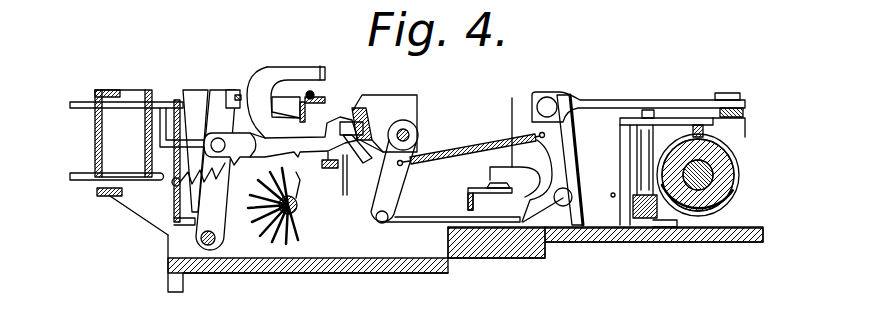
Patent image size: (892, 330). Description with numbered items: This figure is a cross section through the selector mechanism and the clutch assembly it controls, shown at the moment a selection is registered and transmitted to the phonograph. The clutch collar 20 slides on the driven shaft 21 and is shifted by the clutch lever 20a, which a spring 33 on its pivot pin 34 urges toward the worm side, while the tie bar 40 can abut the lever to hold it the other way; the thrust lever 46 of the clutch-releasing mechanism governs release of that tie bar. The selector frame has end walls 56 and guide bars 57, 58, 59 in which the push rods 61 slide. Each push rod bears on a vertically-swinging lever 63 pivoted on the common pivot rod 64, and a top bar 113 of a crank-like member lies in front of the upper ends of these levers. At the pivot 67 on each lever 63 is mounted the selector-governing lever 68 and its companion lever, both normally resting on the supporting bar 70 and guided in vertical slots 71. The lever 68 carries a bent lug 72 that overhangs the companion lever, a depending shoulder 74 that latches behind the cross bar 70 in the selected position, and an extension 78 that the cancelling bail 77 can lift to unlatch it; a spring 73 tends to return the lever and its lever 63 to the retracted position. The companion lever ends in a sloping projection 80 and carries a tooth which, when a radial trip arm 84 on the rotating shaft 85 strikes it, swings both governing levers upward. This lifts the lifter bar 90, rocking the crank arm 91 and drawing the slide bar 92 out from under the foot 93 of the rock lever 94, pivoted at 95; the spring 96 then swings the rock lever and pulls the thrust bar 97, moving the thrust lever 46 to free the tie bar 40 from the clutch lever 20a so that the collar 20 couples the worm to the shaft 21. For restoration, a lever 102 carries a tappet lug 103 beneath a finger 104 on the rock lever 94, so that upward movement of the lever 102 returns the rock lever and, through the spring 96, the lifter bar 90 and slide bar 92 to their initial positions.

The clutch collar 20 is at (742, 170).
The clutch lever 20a is at (683, 122).
The driven shaft 21 is at (725, 193).
The spring 33 is at (650, 222).
The pivot pin 34 is at (650, 108).
The tie bar 40 is at (735, 119).
The thrust lever 46 is at (745, 103).
The end walls 56 is at (377, 248).
The guide bar 57 is at (97, 192).
The guide bar 58 is at (160, 195).
The guide bar 59 is at (173, 113).
The selector element 61 is at (95, 133).
The vertically-swinging lever 63 is at (220, 95).
The pivot rod 64 is at (200, 243).
The pivot 67 is at (230, 149).
The selector-governing lever 68 is at (320, 158).
The supporting bar 70 is at (323, 170).
The vertical slots 71 is at (333, 118).
The lug 72 is at (360, 108).
The spring 73 is at (173, 210).
The depending lug 74 is at (340, 170).
The cancelling bail 77 is at (310, 91).
The extension 78 is at (287, 73).
The downwardly-sloping projection 80 is at (408, 126).
The trip arm 84 is at (270, 225).
The shaft 85 is at (300, 213).
The lifter bar 90 is at (368, 157).
The crank arm 91 is at (420, 131).
The slide bar 92 is at (433, 227).
The foot 93 is at (533, 210).
The rock lever 94 is at (560, 147).
The pivot 95 is at (566, 203).
The spring 96 is at (466, 150).
The thrust bar 97 is at (600, 101).
The lever 102 is at (476, 196).
The tappet lug 103 is at (490, 186).
The finger 104 is at (512, 98).
The top bar 113 is at (238, 92).